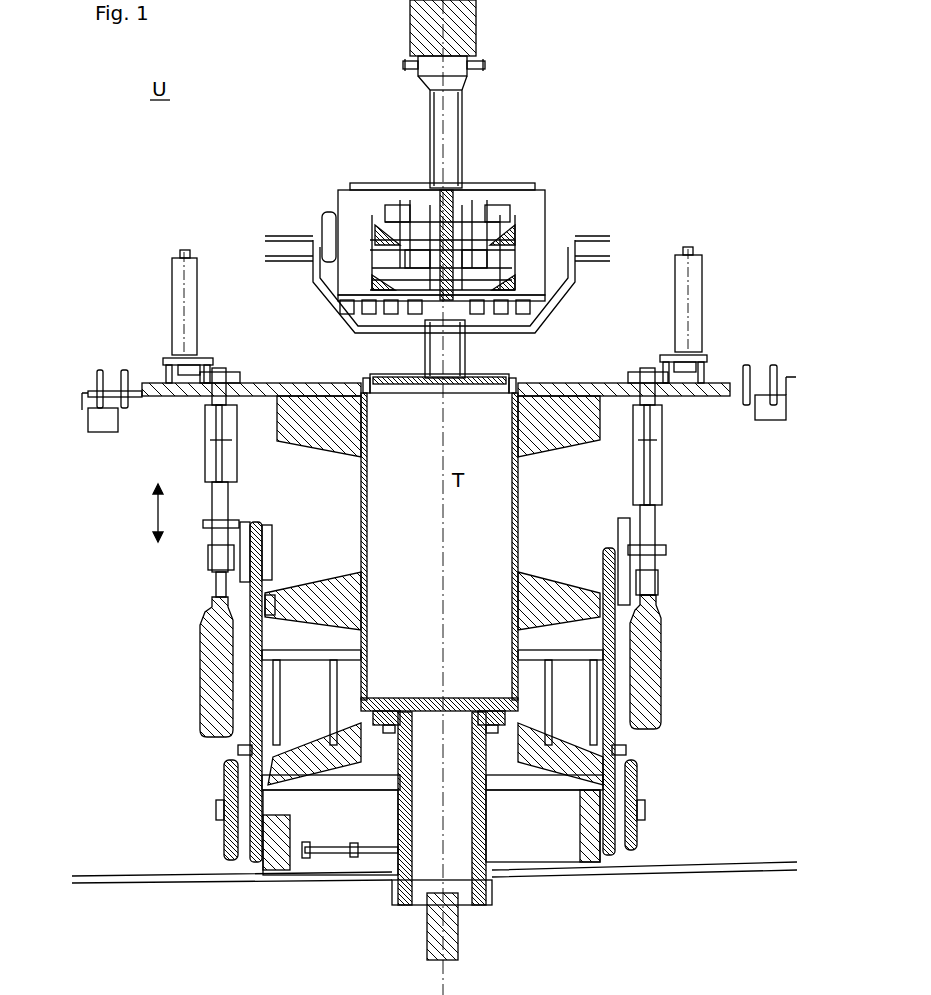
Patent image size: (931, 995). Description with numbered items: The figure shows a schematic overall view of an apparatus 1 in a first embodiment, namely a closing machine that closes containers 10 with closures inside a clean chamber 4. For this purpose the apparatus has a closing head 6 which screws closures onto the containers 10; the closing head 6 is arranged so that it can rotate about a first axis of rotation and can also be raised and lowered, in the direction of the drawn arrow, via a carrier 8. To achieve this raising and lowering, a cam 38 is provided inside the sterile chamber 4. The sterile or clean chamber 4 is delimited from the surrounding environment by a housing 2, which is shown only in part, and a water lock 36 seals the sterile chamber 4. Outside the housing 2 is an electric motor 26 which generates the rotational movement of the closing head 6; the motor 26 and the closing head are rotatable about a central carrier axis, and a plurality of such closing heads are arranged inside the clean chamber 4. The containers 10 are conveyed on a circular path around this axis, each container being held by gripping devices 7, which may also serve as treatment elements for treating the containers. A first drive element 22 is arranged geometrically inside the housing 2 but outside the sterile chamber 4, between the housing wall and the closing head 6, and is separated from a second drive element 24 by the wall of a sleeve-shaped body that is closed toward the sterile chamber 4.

The apparatus 1 is at (135, 617).
The housing 2 is at (147, 385).
The clean chamber 4 is at (270, 493).
The closing head 6 is at (212, 568).
The gripping device 7 is at (263, 571).
The carrier 8 is at (272, 533).
The container 10 is at (210, 690).
The first drive element 22 is at (243, 366).
The second drive element 24 is at (655, 462).
The electric motor 26 is at (175, 280).
The water lock 36 is at (98, 428).
The cam 38 is at (208, 805).